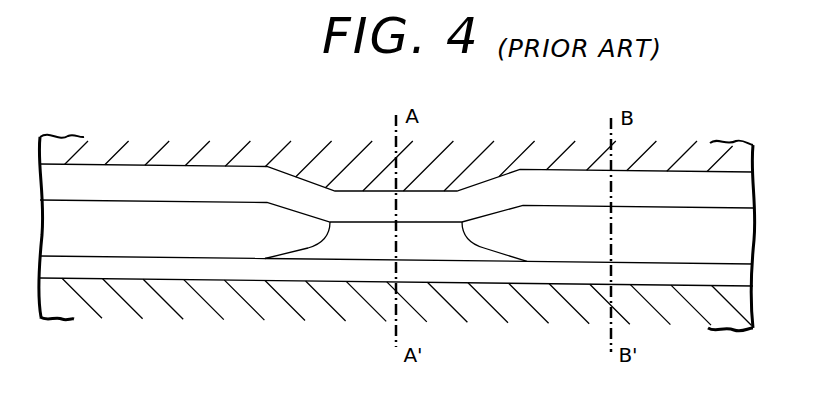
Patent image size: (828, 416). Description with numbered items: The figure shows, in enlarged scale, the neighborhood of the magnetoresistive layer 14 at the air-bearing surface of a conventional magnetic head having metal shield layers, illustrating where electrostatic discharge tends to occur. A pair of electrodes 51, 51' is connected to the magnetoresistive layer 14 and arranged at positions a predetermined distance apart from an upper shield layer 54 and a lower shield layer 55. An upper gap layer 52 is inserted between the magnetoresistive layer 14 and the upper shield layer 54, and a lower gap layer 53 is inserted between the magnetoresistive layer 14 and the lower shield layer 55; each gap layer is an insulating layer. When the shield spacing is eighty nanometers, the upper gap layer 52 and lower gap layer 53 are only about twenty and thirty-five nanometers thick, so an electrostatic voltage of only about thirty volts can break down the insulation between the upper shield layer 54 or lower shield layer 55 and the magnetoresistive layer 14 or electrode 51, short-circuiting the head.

The magnetoresistive layer 14 is at (448, 253).
The electrode 51 is at (607, 296).
The electrode 51' is at (185, 293).
The upper gap layer 52 is at (443, 202).
The lower gap layer 53 is at (337, 270).
The upper shield layer 54 is at (112, 150).
The lower shield layer 55 is at (80, 307).